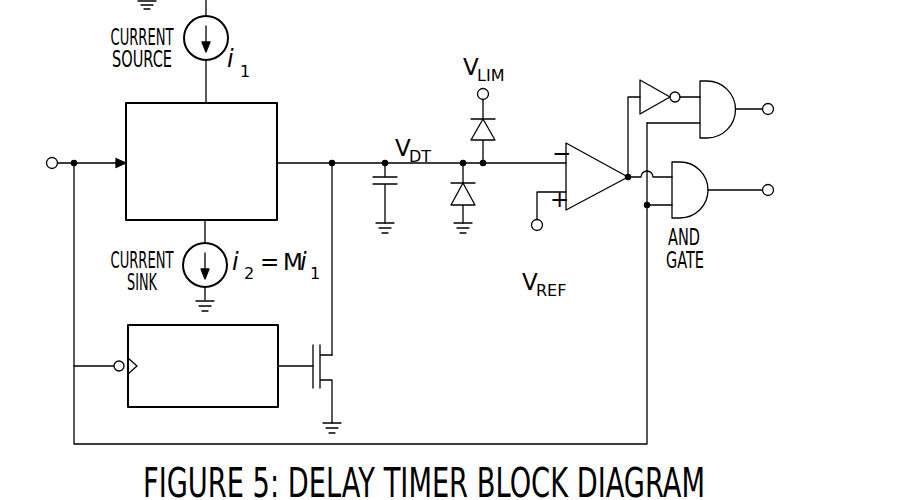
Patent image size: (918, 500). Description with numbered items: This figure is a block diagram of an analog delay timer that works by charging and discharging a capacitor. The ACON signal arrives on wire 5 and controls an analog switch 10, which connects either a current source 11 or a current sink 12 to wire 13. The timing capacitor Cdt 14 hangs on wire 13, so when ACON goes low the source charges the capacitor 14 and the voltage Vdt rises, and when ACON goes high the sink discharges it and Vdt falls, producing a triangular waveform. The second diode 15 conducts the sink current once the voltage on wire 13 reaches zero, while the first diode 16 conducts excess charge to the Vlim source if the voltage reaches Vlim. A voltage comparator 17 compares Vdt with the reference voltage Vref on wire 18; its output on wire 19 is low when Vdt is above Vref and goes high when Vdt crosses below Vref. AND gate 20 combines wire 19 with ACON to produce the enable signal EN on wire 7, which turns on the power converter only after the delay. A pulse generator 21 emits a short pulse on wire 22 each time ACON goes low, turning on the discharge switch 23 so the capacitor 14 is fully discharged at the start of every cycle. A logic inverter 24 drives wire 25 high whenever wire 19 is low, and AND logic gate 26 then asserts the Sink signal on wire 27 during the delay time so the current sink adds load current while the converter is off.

The wire 5 is at (88, 162).
The wire 7 is at (730, 190).
The analog switch 10 is at (280, 103).
The current source 11 is at (229, 38).
The current sink 12 is at (222, 251).
The wire 13 is at (331, 160).
The capacitor Cdt 14 is at (375, 186).
The diode D2 15 is at (455, 208).
The diode D1 16 is at (472, 136).
The voltage comparator 17 is at (576, 206).
The wire 18 is at (533, 221).
The wire 19 is at (628, 108).
The AND gate 20 is at (706, 208).
The pulse generator 21 is at (130, 325).
The wire 22 is at (293, 364).
The discharge switch 23 is at (325, 365).
The logic inverter 24 is at (643, 82).
The wire 25 is at (690, 96).
The AND logic gate 26 is at (725, 86).
The wire 27 is at (748, 110).